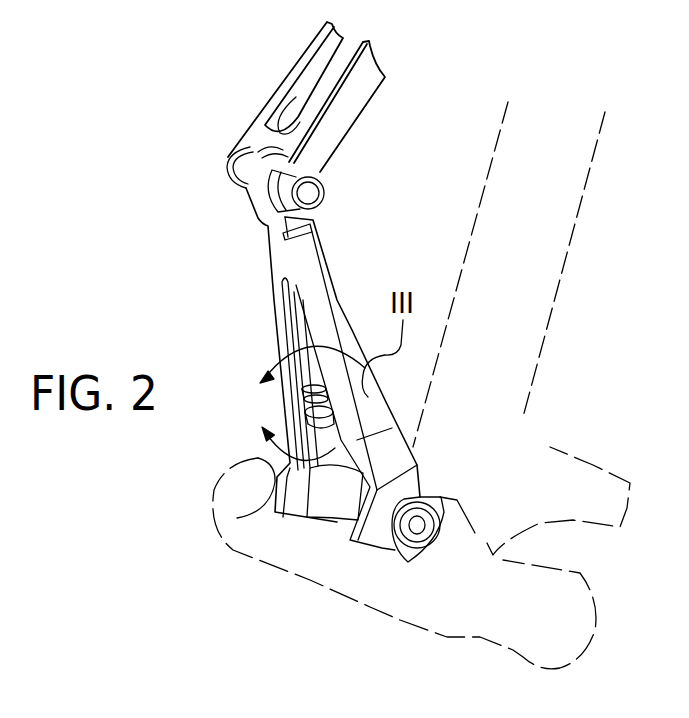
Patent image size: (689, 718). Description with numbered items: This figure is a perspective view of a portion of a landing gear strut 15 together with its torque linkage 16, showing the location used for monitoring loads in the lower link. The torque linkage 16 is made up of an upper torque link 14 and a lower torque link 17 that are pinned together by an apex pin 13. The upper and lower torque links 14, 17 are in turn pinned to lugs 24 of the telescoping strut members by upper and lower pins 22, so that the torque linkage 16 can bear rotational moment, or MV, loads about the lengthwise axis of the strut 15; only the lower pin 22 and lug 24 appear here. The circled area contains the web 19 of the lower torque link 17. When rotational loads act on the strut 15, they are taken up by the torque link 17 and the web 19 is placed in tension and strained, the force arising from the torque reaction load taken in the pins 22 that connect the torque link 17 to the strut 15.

The apex pin 13 is at (227, 173).
The upper torque link 14 is at (275, 143).
The landing gear strut 15 is at (435, 120).
The torque linkage 16 is at (232, 212).
The lower torque link 17 is at (305, 248).
The web 19 is at (237, 518).
The lower pin 22 is at (452, 480).
The lug 24 is at (397, 548).